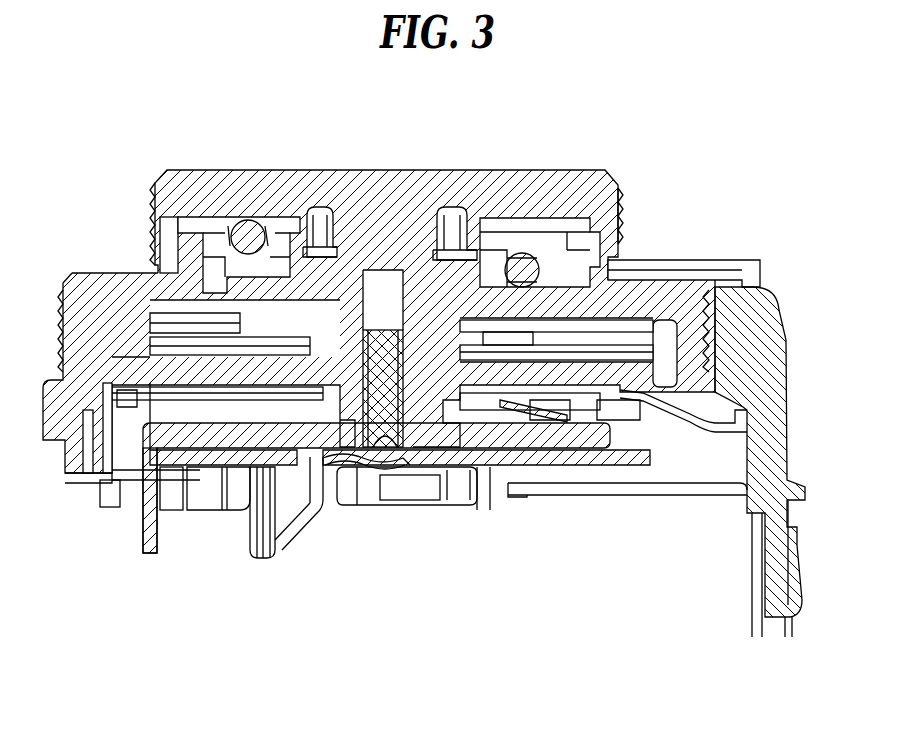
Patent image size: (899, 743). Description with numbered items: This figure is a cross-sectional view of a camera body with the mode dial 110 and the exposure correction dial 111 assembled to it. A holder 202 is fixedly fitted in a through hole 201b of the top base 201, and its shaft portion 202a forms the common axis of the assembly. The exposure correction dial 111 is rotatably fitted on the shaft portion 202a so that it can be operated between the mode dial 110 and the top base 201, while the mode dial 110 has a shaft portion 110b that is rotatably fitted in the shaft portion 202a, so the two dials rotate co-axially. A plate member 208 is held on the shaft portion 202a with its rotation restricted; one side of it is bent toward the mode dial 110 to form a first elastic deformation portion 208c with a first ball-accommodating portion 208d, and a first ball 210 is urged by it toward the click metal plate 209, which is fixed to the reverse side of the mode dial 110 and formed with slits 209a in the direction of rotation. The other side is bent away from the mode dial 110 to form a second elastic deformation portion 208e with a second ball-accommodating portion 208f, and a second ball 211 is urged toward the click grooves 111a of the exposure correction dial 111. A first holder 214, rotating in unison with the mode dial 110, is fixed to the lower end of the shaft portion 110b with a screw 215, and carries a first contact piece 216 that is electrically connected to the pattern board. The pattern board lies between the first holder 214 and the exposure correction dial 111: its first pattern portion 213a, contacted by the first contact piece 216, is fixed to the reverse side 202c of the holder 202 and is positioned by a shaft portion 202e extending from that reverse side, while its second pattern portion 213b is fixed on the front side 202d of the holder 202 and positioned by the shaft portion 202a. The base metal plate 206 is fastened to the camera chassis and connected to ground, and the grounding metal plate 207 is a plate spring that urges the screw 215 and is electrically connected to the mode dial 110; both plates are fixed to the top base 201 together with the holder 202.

The mode dial 110 is at (610, 178).
The shaft portion of the mode dial 110b is at (426, 228).
The exposure correction dial 111 is at (746, 264).
The click grooves 111a is at (553, 398).
The top base 201 is at (755, 303).
The through hole 201b is at (635, 385).
The holder 202 is at (608, 395).
The shaft portion of the holder 202a is at (620, 246).
The reverse side of the holder 202c is at (183, 480).
The front side of the holder 202d is at (237, 383).
The shaft portion extending from the reverse side of the holder 202e is at (258, 533).
The base metal plate 206 is at (150, 508).
The grounding metal plate 207 is at (313, 520).
The plate member 208 is at (322, 207).
The first elastic deformation portion 208c is at (172, 213).
The first ball-accommodating portion 208d is at (222, 217).
The second elastic deformation portion 208e is at (557, 257).
The second ball-accommodating portion 208f is at (518, 292).
The click metal plate 209 is at (617, 227).
The slits 209a is at (272, 210).
The first ball 210 is at (247, 221).
The second ball 211 is at (521, 258).
The first pattern portion 213a is at (157, 415).
The second pattern portion 213b is at (203, 343).
The first holder 214 is at (545, 478).
The screw 215 is at (430, 495).
The first contact piece 216 is at (487, 462).